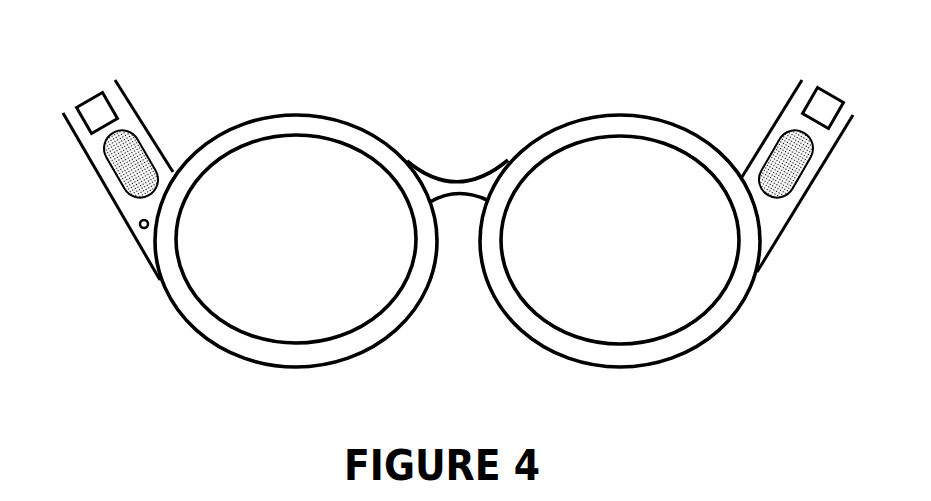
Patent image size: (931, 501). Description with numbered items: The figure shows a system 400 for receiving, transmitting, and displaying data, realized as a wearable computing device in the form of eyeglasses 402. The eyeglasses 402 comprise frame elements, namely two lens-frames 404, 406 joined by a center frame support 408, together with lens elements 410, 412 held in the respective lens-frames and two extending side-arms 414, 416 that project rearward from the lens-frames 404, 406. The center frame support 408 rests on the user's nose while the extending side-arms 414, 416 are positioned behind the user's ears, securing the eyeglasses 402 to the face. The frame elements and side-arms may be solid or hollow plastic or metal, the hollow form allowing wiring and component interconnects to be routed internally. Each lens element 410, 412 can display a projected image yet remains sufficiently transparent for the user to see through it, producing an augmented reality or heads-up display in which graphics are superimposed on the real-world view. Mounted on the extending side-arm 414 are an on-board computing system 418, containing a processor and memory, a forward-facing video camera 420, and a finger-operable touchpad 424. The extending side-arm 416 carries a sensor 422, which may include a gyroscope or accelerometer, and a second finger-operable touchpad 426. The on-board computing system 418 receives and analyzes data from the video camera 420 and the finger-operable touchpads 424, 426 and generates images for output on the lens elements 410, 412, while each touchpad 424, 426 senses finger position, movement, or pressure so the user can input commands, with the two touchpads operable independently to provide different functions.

The system 400 is at (753, 334).
The eyeglasses 402 is at (387, 86).
The lens-frame 404 is at (260, 118).
The lens-frame 406 is at (597, 116).
The center frame support 408 is at (453, 180).
The lens element 410 is at (233, 300).
The lens element 412 is at (563, 318).
The extending side-arm 414 is at (158, 143).
The extending side-arm 416 is at (768, 132).
The on-board computing system 418 is at (103, 115).
The video camera 420 is at (140, 229).
The sensor 422 is at (820, 108).
The finger-operable touchpad 424 is at (132, 163).
The finger-operable touchpad 426 is at (788, 168).